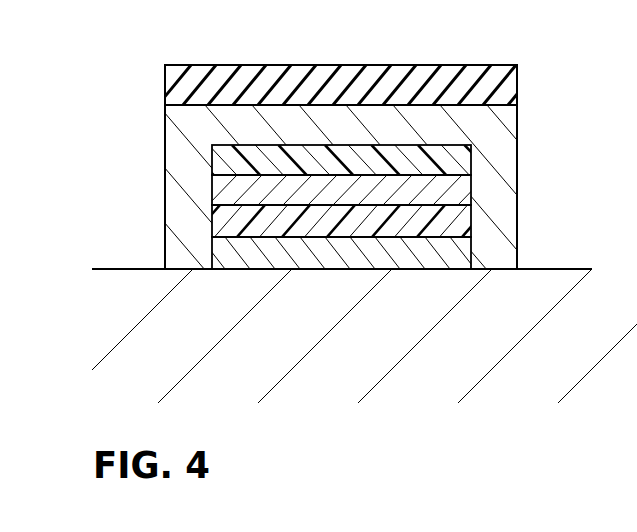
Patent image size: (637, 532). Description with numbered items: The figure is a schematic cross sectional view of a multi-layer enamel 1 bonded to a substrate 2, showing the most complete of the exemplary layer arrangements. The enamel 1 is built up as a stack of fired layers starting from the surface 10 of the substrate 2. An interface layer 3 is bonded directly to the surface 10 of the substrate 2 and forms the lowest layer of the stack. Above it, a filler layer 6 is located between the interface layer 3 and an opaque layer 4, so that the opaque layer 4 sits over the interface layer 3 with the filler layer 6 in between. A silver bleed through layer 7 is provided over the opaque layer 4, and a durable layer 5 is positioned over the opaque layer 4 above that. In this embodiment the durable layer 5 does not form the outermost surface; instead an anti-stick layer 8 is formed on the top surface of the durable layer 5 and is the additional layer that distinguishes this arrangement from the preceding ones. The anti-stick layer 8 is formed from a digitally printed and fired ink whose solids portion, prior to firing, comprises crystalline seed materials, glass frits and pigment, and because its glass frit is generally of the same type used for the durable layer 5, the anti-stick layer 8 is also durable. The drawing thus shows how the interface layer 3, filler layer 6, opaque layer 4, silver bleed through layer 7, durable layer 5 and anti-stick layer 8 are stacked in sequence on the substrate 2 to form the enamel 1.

The multi-layer enamel 1 is at (318, 142).
The substrate 2 is at (572, 282).
The interface layer 3 is at (455, 255).
The opaque layer 4 is at (455, 190).
The durable layer 5 is at (502, 118).
The filler layer 6 is at (455, 222).
The silver bleed through layer 7 is at (455, 155).
The anti-stick layer 8 is at (480, 64).
The surface 10 is at (114, 255).